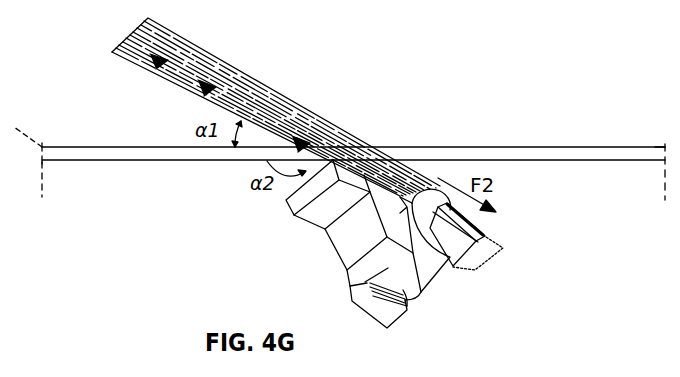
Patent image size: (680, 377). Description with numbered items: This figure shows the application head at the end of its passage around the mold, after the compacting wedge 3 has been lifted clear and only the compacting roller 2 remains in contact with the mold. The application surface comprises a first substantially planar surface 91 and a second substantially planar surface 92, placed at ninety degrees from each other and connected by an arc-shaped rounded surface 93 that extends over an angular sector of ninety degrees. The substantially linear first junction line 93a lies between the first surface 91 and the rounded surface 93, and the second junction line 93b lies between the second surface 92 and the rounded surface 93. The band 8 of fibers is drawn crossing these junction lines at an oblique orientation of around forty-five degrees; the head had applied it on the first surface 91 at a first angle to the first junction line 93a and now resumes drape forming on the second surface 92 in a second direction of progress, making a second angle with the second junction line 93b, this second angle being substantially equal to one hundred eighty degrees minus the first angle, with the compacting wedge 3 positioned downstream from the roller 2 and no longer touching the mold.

The band of fibers 8 is at (220, 76).
The rounded surface 93 is at (339, 152).
The first junction line 93a is at (521, 147).
The second junction line 93b is at (545, 162).
The first surface 91 is at (663, 146).
The second surface 92 is at (663, 178).
The compacting wedge 3 is at (310, 220).
The compacting roller 2 is at (430, 284).